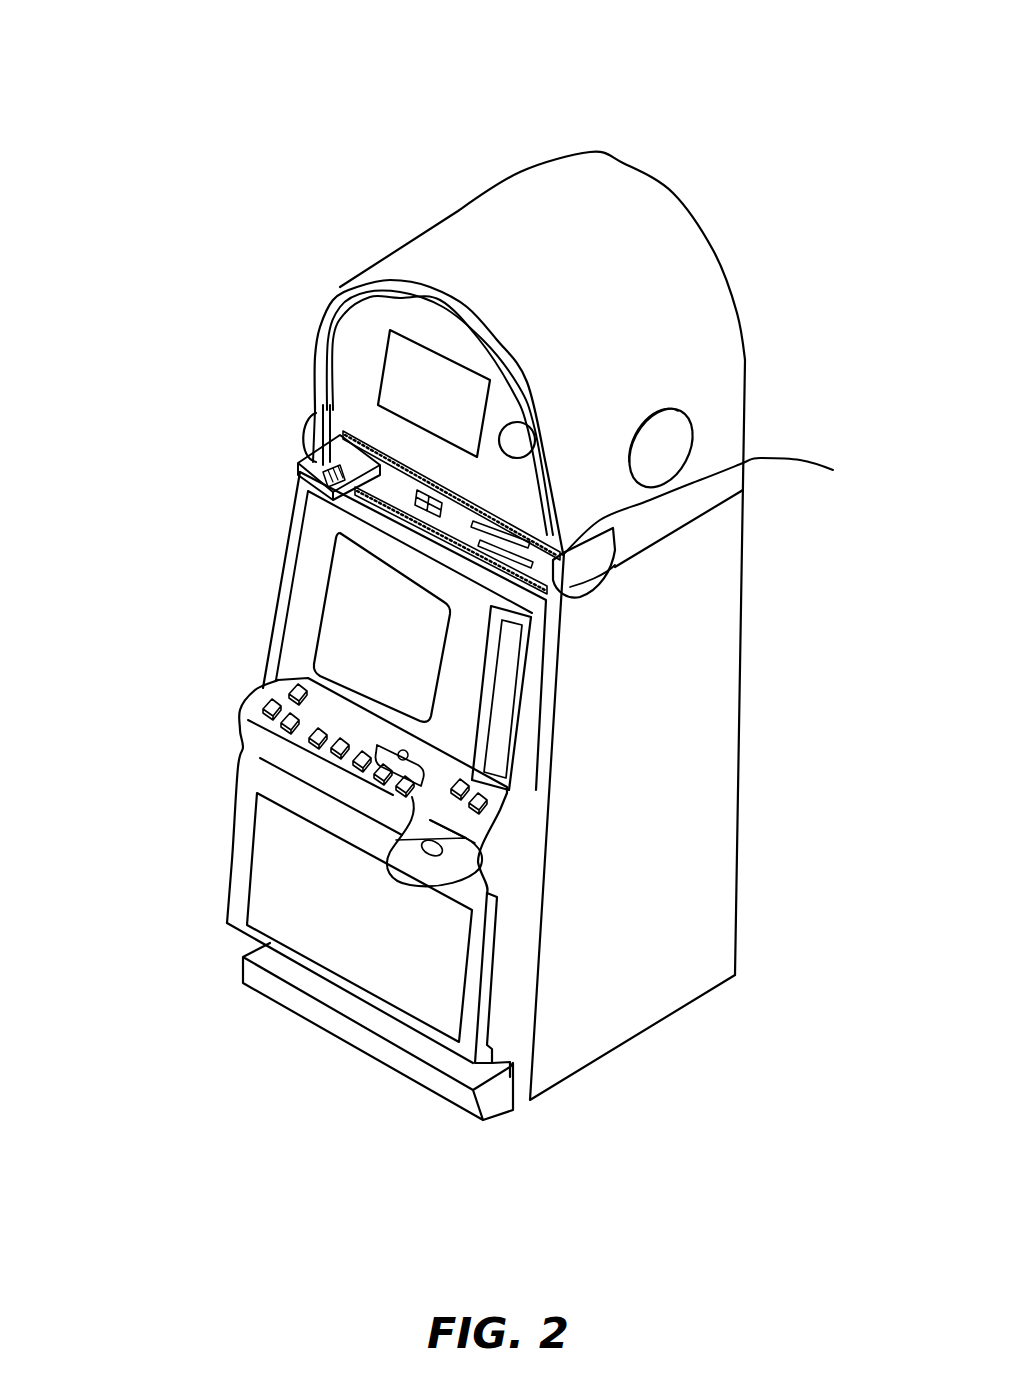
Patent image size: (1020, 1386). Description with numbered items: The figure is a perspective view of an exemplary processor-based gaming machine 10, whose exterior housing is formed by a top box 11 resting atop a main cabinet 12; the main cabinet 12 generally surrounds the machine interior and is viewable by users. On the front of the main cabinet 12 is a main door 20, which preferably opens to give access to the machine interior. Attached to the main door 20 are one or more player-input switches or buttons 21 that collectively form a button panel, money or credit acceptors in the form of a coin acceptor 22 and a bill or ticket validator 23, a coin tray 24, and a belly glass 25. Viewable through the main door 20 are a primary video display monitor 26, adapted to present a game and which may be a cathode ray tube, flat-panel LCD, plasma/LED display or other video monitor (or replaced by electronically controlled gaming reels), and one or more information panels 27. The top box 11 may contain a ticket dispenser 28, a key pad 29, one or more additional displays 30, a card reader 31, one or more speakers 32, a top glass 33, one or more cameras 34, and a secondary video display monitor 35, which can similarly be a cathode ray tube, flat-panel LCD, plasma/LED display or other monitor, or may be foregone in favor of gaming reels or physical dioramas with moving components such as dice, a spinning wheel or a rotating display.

The gaming machine 10 is at (160, 101).
The top box 11 is at (630, 328).
The main cabinet 12 is at (662, 808).
The main door 20 is at (515, 880).
The player-input switches or buttons 21 is at (330, 747).
The coin acceptor 22 is at (497, 775).
The bill or ticket validator 23 is at (503, 998).
The coin tray 24 is at (490, 1100).
The belly glass 25 is at (283, 885).
The primary video display monitor 26 is at (340, 635).
The information panels 27 is at (510, 660).
The ticket dispenser 28 is at (327, 448).
The key pad 29 is at (415, 493).
The additional displays 30 is at (552, 550).
The card reader 31 is at (720, 506).
The speakers 32 is at (310, 437).
The top glass 33 is at (327, 390).
The cameras 34 is at (517, 440).
The secondary video display monitor 35 is at (437, 382).